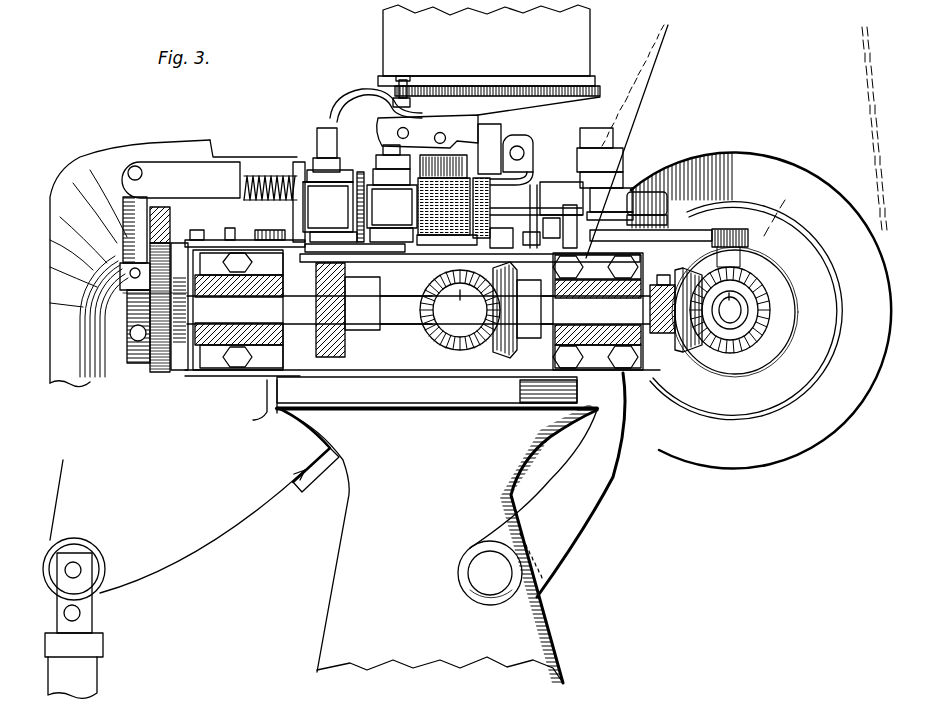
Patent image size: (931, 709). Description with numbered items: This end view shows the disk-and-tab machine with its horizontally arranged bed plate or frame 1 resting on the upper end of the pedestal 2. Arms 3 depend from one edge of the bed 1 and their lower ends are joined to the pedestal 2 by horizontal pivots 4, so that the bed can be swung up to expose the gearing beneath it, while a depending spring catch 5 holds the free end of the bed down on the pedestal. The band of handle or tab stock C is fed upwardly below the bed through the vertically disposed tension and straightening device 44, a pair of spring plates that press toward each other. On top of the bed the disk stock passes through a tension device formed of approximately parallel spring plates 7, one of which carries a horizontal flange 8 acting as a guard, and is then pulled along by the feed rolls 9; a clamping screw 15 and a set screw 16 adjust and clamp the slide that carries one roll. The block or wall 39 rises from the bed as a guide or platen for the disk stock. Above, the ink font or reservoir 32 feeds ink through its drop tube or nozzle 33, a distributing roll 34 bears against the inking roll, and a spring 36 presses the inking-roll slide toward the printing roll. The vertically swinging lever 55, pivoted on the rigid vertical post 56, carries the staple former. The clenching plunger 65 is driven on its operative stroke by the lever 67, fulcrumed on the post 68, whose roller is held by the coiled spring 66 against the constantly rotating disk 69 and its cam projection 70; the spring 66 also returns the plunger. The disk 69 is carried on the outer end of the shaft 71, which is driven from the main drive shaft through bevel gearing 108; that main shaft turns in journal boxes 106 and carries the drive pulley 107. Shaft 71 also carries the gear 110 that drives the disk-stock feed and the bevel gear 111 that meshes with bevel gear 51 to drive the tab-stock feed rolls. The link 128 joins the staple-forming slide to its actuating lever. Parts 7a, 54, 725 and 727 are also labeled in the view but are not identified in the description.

The bed plate or frame 1 is at (380, 412).
The pedestal 2 is at (441, 543).
The arms 3 is at (572, 528).
The horizontal pivots 4 is at (480, 583).
The spring catch 5 is at (262, 420).
The spring plates 7 is at (330, 185).
The second valve 7a is at (392, 193).
The longitudinal horizontal flange 8 is at (365, 186).
The feed rolls 9 is at (310, 213).
The clamping screw 15 is at (430, 244).
The set screw 16 is at (522, 282).
The ink font or reservoir 32 is at (577, 53).
The ink discharge or drop tube or nozzle 33 is at (495, 140).
The distributing roll 34 is at (503, 186).
The spring 36 is at (565, 222).
The block or wall 39 is at (300, 160).
The tension and straightening device 44 is at (285, 470).
The bevel gear 51 is at (445, 325).
The pipe 54 is at (370, 130).
The vertically swinging lever 55 is at (420, 135).
The rigid vertical post 56 is at (533, 160).
The clenching tool or plunger 65 is at (181, 180).
The coiled spring 66 is at (255, 175).
The lever 67 is at (130, 217).
The post 68 is at (133, 293).
The constantly rotating disk 69 is at (160, 373).
The cam projection 70 is at (120, 270).
The shaft 71 is at (400, 315).
The journal boxes 106 is at (733, 312).
The drive wheel or pulley 107 is at (755, 462).
The bevel gearing 108 is at (688, 348).
The gear 110 is at (335, 357).
The bevel gear 111 is at (510, 343).
The link 128 is at (648, 172).
The brake bar 725 is at (707, 233).
The wheel rim 727 is at (789, 224).
The band of handle or tab stock C is at (203, 552).